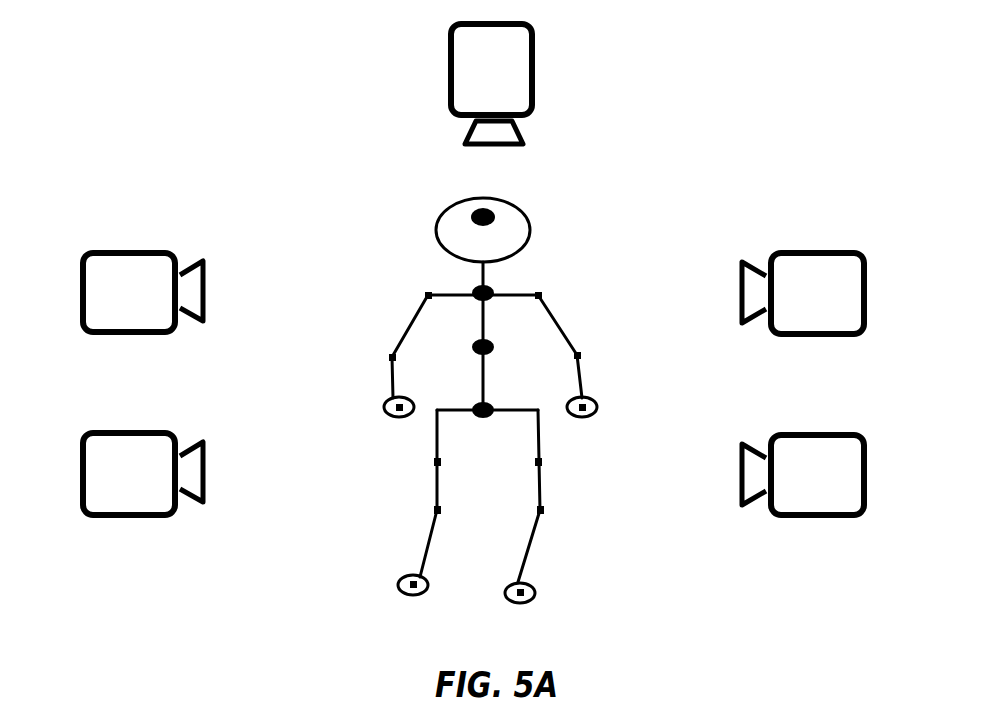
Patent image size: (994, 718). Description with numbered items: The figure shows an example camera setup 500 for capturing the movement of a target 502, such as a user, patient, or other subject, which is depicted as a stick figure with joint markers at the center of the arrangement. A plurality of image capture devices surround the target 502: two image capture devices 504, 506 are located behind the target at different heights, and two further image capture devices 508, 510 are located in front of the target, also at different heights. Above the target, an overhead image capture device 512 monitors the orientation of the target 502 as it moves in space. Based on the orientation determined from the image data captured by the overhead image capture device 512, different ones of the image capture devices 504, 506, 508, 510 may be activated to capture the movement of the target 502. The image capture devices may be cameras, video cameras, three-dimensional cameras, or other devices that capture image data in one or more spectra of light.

The camera setup 500 is at (188, 80).
The target 502 is at (578, 207).
The image capture device 504 is at (84, 249).
The image capture device 506 is at (84, 428).
The image capture device 508 is at (866, 256).
The image capture device 510 is at (866, 432).
The overhead image capture device 512 is at (449, 30).